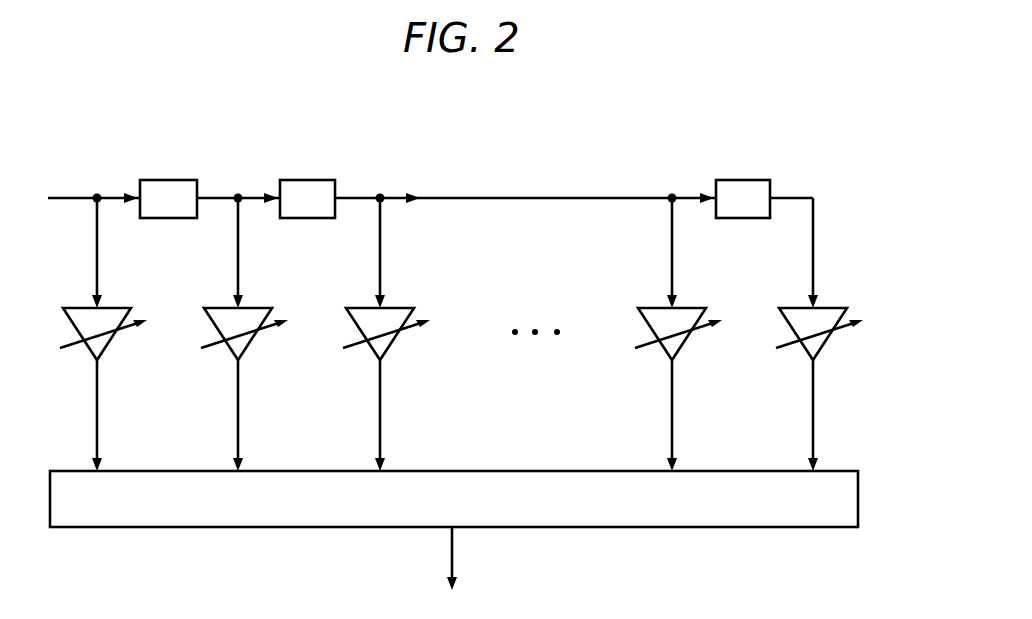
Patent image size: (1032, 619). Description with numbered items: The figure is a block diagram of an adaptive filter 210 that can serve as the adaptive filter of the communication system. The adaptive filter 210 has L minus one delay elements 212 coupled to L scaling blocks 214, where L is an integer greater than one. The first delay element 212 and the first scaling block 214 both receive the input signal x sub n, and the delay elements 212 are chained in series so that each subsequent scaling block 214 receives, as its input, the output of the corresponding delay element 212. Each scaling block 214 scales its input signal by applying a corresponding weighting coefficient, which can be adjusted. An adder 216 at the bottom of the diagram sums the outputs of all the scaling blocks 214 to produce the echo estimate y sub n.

The adaptive filter 210 is at (490, 94).
The delay elements 212 is at (745, 180).
The scaling blocks 214 is at (115, 307).
The adder 216 is at (497, 471).